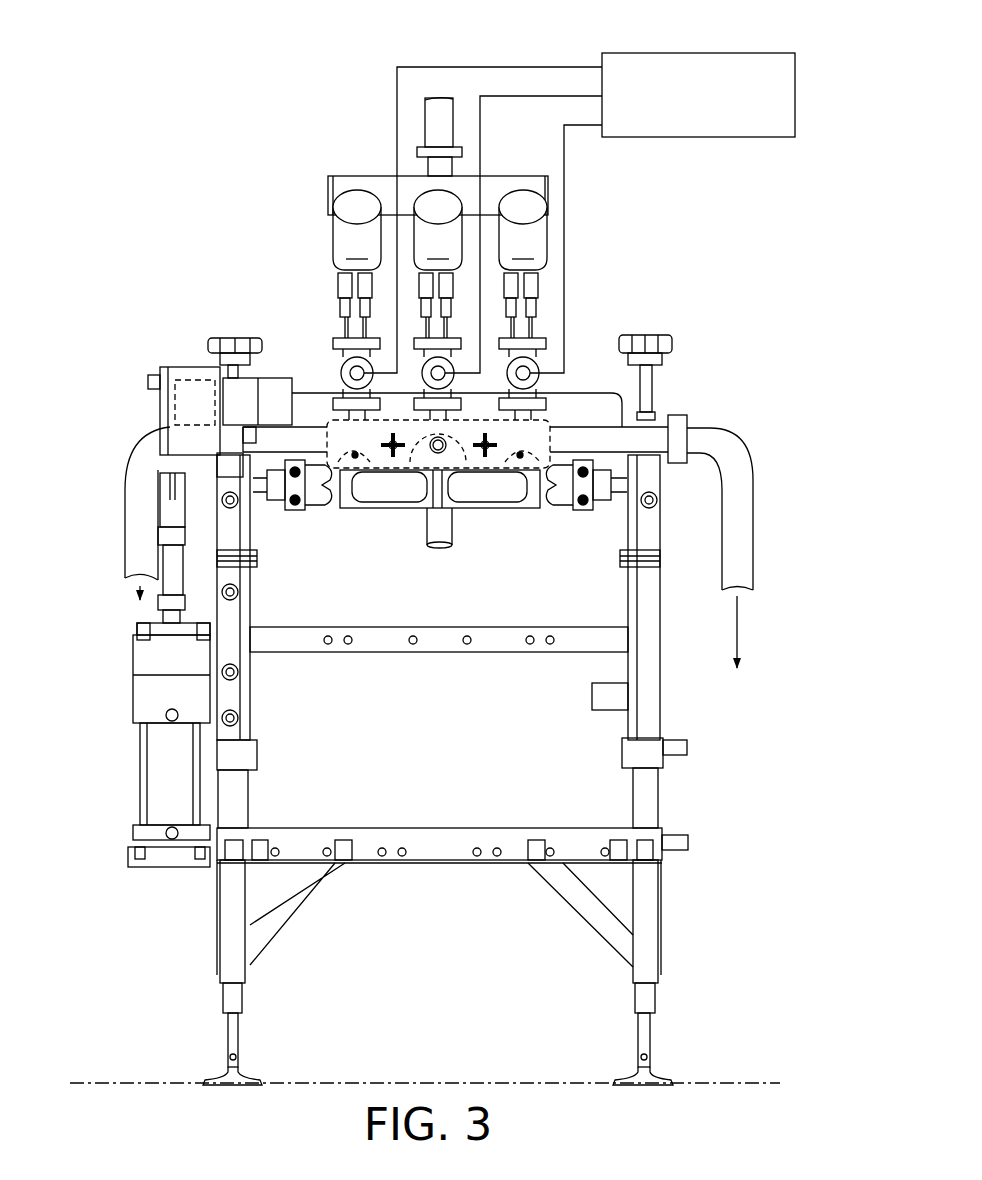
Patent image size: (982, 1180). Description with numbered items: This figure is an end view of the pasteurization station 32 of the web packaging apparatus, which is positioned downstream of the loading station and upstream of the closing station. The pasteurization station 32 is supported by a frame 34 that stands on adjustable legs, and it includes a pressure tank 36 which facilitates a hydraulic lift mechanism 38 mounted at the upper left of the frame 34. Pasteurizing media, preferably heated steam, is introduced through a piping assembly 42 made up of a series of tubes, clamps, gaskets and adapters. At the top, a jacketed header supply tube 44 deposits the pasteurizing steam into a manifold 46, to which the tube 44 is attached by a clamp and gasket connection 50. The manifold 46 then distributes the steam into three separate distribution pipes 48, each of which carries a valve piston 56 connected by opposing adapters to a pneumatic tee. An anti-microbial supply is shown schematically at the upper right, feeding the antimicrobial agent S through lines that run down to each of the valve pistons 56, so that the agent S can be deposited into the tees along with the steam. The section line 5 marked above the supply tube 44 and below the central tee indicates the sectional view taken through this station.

The antimicrobial agent S is at (698, 53).
The section 5- 5 is at (439, 92).
The pasteurization station 32 is at (130, 968).
The frame 34 is at (652, 962).
The pressure tank 36 is at (155, 778).
The hydraulic lift mechanism 38 is at (148, 415).
The piping assembly 42 is at (290, 190).
The jacketed header supply tube 44 is at (433, 126).
The manifold 46 is at (508, 180).
The distribution pipes 48 is at (315, 293).
The clamp and gasket connection 50 is at (421, 155).
The valve piston 56 is at (440, 264).